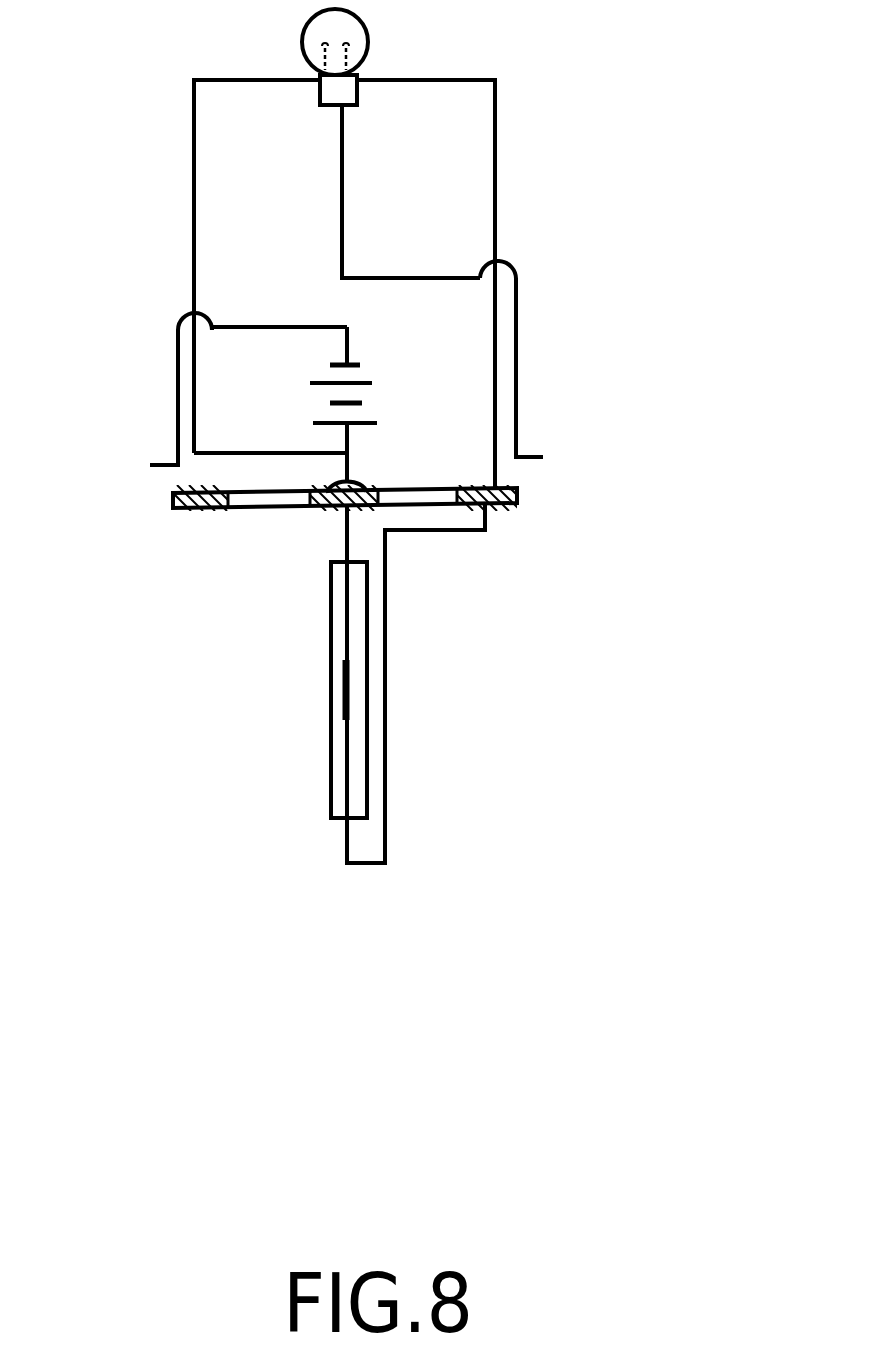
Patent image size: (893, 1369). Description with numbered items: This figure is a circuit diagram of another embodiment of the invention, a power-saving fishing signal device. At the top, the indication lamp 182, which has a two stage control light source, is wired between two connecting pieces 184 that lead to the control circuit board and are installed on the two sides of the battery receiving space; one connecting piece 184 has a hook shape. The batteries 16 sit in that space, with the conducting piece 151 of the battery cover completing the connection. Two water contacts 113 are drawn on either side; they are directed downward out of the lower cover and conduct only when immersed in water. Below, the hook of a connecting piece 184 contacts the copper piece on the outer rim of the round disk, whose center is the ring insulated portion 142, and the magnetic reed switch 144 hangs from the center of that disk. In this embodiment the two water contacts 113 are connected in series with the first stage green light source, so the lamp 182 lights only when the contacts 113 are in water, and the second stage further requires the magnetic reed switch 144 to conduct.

The indication lamp 182 is at (366, 30).
The connecting pieces 184 is at (193, 255).
The water contacts 113 is at (178, 365).
The conducting piece 151 is at (243, 450).
The batteries 16 is at (370, 383).
The insulated portion 142 is at (433, 491).
The magnetic reed switch 144 is at (362, 655).